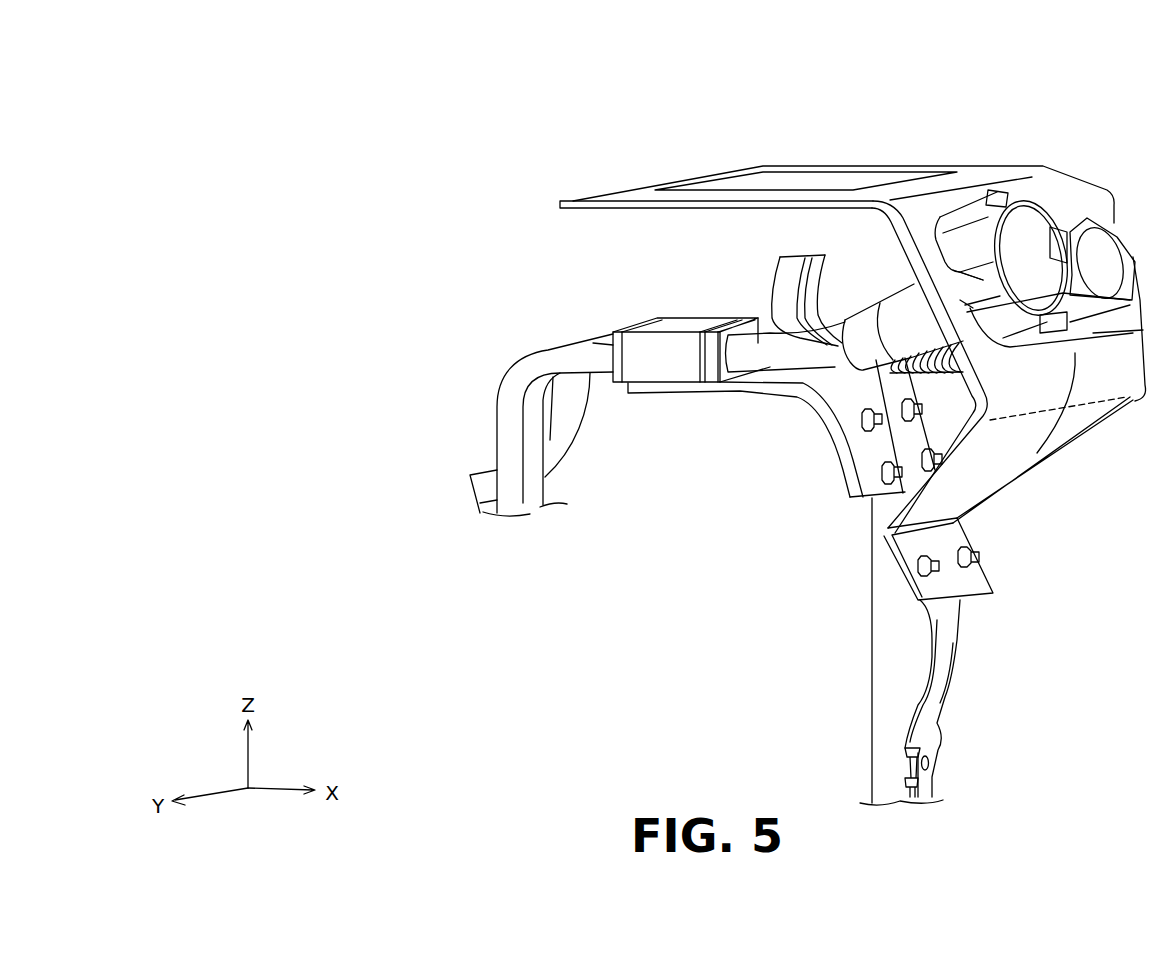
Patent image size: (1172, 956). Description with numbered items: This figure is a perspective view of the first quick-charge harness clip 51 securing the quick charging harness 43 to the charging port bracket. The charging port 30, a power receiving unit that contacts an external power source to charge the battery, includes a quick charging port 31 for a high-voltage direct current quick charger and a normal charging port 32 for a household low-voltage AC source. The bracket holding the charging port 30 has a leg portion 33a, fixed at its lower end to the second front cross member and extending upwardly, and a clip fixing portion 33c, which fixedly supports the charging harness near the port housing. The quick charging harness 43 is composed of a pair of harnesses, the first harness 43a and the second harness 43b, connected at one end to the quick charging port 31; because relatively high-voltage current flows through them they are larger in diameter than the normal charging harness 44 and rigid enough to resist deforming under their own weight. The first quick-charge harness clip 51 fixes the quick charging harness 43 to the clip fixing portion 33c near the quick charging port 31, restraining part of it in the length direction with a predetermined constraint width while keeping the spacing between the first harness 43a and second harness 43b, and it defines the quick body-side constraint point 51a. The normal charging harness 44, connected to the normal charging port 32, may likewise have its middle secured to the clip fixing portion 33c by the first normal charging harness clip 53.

The charging port 30 is at (993, 245).
The quick charging port 31 is at (1025, 243).
The normal charging port 32 is at (1102, 243).
The leg portion 33a is at (880, 633).
The clip fixing portion 33c is at (766, 393).
The quick charging harness 43 is at (498, 315).
The first harness 43a is at (517, 397).
The second harness 43b is at (592, 342).
The normal charging harness 44 is at (487, 483).
The first quick-charge harness clip 51 is at (722, 368).
The quick body-side constraint point 51a is at (602, 353).
The first normal charging harness clip 53 is at (683, 318).